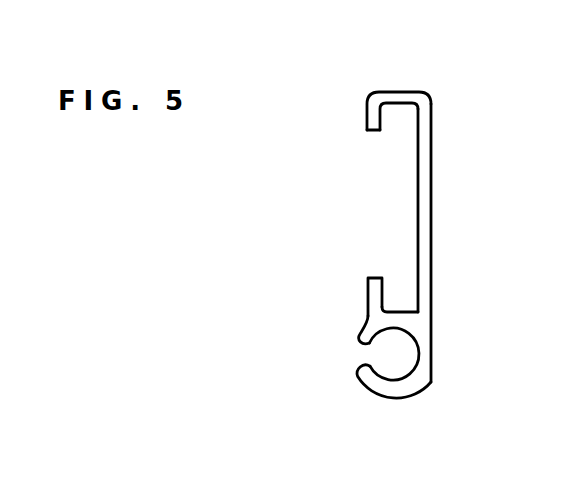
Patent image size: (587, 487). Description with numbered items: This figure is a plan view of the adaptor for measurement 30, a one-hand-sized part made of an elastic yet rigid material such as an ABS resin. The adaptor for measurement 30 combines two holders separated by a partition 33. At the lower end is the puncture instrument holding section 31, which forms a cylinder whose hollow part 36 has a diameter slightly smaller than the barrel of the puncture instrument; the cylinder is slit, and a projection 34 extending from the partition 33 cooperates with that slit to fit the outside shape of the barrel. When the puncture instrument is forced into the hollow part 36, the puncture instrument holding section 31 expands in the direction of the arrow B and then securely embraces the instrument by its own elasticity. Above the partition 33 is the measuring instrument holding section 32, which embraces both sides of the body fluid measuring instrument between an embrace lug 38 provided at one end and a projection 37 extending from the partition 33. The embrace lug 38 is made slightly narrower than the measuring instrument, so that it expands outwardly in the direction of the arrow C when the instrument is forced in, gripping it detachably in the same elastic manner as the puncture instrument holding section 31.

The adaptor for measurement 30 is at (450, 100).
The puncture instrument holding section 31 is at (425, 380).
The measuring instrument holding section 32 is at (425, 217).
The partition 33 is at (398, 321).
The projection 34 is at (363, 339).
The hollow part 36 is at (406, 343).
The projection 37 is at (371, 292).
The embrace lug 38 is at (369, 120).
The arrow C is at (365, 82).
The arrow B is at (362, 398).